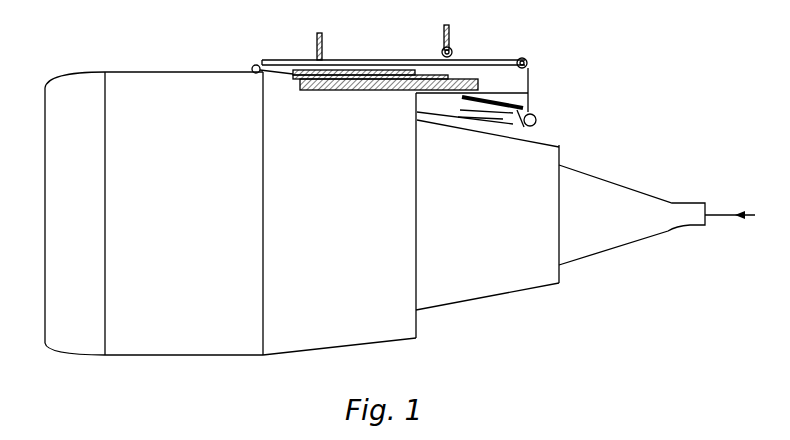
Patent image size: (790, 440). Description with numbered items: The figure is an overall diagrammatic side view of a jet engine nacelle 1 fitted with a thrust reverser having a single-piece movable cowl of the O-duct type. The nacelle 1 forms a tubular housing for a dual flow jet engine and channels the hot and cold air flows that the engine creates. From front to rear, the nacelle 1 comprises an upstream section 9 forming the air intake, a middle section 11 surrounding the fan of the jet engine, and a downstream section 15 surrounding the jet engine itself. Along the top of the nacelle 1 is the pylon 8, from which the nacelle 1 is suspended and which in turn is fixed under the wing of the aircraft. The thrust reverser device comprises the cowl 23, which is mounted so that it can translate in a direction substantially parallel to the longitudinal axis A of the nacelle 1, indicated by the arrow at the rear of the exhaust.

The nacelle 1 is at (76, 60).
The upstream section 9 is at (70, 336).
The middle section 11 is at (180, 341).
The downstream section 15 is at (343, 329).
The cowl 23 is at (378, 110).
The pylon 8 is at (528, 93).
The longitudinal axis A is at (724, 218).